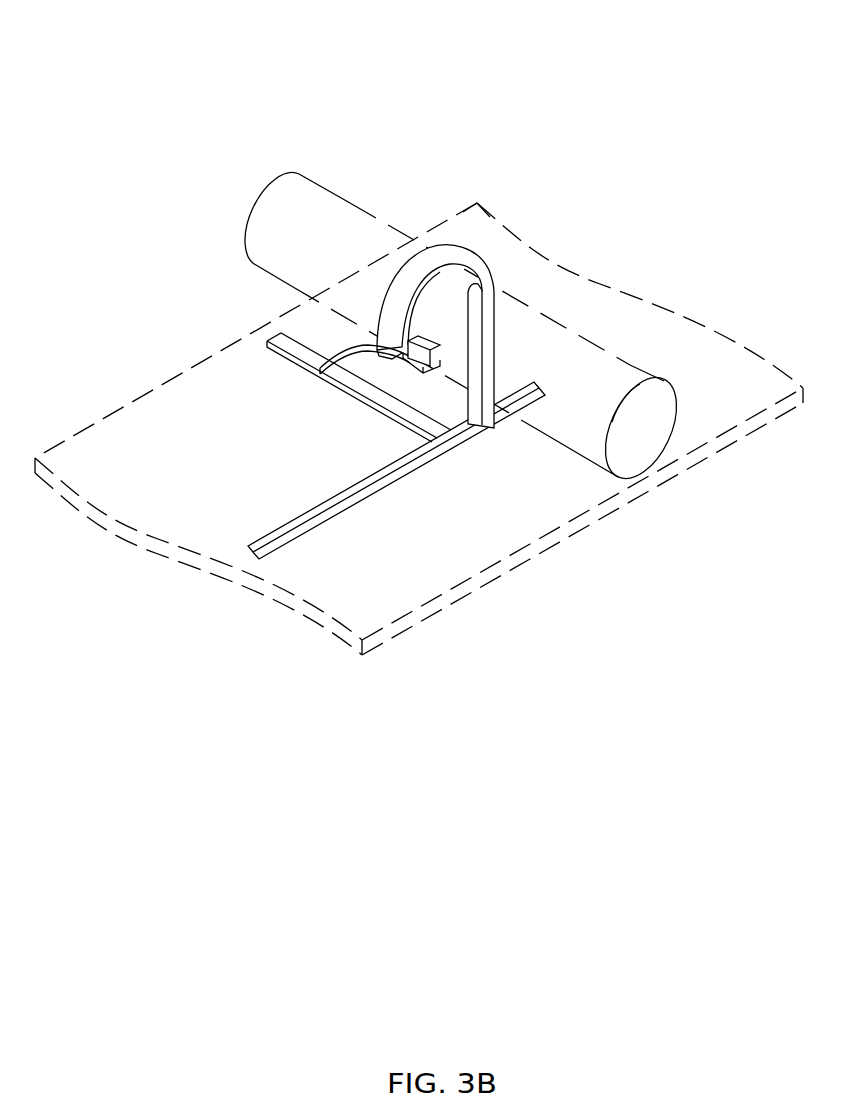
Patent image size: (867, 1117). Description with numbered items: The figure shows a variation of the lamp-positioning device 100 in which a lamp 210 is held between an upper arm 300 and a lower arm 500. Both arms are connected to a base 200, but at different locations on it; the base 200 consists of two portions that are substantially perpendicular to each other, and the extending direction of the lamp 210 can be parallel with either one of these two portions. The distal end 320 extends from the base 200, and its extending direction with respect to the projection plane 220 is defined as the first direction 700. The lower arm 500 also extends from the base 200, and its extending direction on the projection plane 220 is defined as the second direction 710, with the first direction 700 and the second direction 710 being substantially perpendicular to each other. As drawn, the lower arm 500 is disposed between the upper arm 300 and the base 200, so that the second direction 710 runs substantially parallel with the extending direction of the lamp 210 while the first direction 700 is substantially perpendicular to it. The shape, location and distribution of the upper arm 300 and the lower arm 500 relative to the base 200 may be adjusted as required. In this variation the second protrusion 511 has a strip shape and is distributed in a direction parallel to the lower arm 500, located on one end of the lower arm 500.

The lamp-positioning device 100 is at (634, 52).
The base 200 is at (373, 483).
The lamp 210 is at (683, 427).
The projection plane 220 is at (573, 530).
The upper arm 300 is at (452, 250).
The distal end 320 is at (395, 283).
The lower arm 500 is at (368, 346).
The second protrusion 511 is at (420, 353).
The first direction 700 is at (480, 95).
The second direction 710 is at (303, 722).